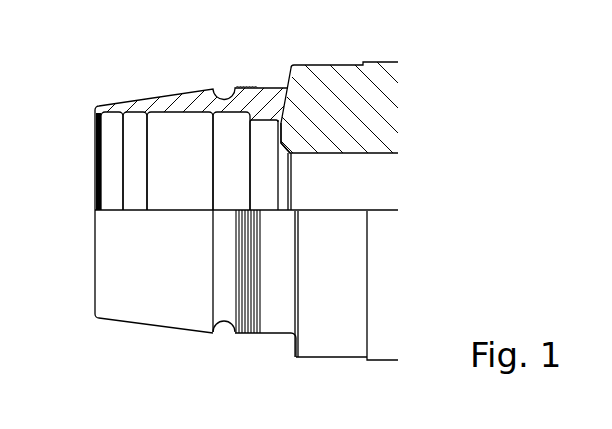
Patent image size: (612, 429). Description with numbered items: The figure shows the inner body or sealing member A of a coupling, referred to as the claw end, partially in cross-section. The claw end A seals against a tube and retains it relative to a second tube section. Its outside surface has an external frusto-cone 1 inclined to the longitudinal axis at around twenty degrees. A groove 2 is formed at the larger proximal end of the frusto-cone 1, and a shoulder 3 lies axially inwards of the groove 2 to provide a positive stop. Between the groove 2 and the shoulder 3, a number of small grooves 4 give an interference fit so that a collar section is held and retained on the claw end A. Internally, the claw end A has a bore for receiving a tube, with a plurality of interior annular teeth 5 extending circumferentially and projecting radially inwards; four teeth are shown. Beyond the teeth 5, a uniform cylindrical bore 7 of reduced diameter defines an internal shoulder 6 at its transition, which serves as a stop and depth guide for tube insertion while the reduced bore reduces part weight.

The inner body or sealing member A is at (73, 308).
The external frusto-cone 1 is at (145, 323).
The groove 2 is at (223, 328).
The shoulder 3 is at (293, 350).
The small grooves 4 is at (243, 85).
The interior annular protuberances or teeth 5 is at (203, 125).
The internal shoulder 6 is at (282, 123).
The uniform cylindrical bore 7 is at (360, 150).